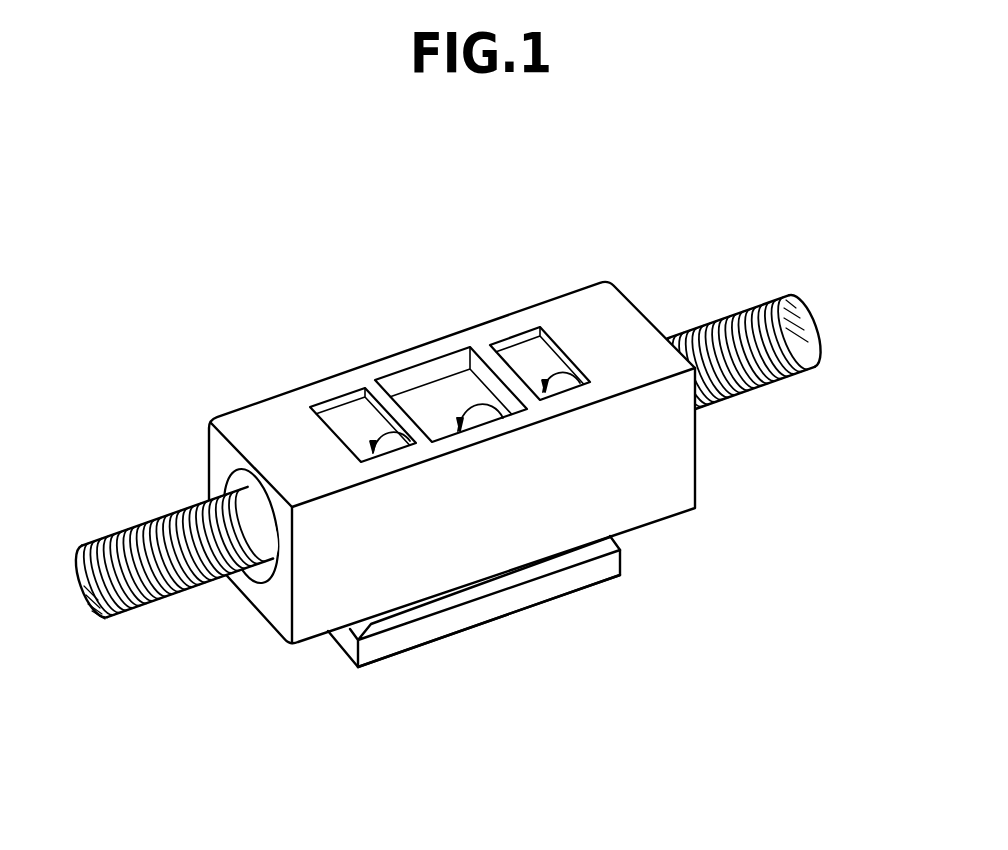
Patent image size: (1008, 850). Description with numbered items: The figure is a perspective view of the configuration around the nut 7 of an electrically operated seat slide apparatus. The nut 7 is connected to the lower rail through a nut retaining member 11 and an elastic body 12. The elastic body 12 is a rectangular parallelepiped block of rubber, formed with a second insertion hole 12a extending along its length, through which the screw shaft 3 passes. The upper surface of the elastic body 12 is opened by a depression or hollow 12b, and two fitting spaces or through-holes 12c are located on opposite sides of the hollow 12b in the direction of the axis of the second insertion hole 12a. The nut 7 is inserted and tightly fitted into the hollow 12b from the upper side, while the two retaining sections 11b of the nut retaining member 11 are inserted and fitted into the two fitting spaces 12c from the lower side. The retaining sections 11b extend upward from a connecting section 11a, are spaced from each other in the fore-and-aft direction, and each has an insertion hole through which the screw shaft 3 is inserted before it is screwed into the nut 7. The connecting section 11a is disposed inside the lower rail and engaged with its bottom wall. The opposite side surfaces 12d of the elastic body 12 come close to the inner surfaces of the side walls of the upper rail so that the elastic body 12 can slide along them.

The screw shaft 3 is at (758, 387).
The nut 7 is at (430, 398).
The nut retaining member 11 is at (539, 610).
The connecting section 11a is at (390, 643).
The retaining sections 11b is at (347, 413).
The elastic body 12 is at (582, 284).
The second insertion hole 12a is at (262, 506).
The hollow 12b is at (503, 418).
The fitting spaces 12c is at (413, 445).
The side surfaces 12d is at (663, 438).